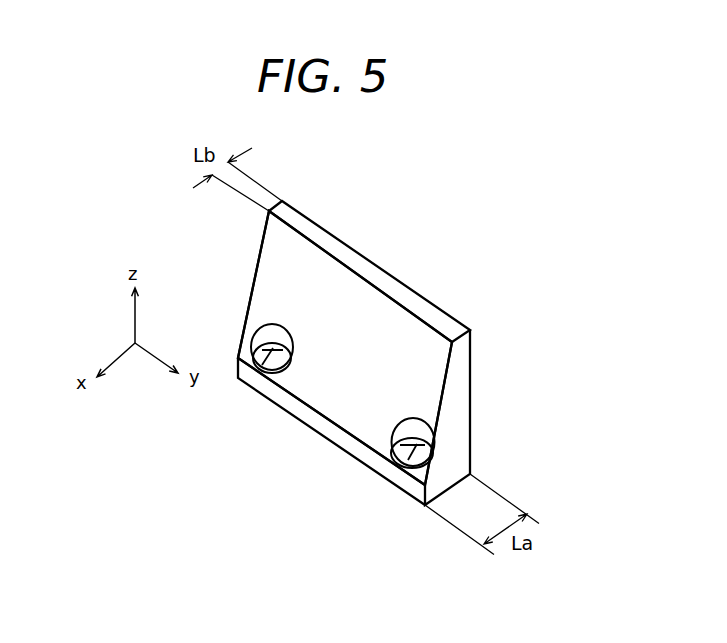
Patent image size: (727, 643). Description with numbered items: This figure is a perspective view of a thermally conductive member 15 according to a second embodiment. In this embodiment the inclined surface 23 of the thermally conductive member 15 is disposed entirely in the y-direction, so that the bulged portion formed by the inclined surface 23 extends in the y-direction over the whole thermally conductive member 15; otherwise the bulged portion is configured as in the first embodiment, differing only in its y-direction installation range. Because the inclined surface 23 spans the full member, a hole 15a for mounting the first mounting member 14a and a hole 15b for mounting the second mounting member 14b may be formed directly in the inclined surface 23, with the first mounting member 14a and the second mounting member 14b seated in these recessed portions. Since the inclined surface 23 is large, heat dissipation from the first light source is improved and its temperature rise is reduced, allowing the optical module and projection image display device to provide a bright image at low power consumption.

The thermally conductive member 15 is at (372, 268).
The inclined surface 23 is at (308, 258).
The hole for mounting the first mounting member 15a is at (275, 324).
The hole for mounting the second mounting member 15b is at (421, 420).
The first mounting member 14a is at (259, 372).
The second mounting member 14b is at (404, 467).